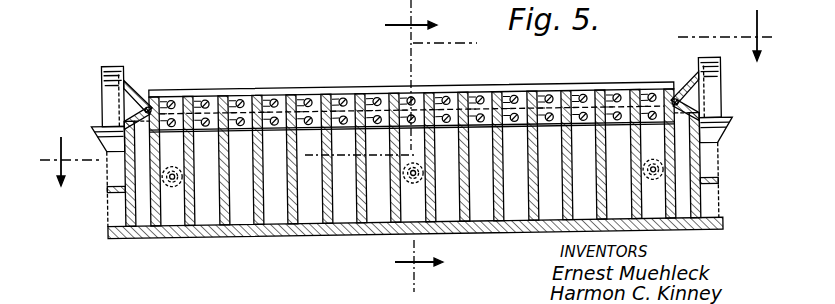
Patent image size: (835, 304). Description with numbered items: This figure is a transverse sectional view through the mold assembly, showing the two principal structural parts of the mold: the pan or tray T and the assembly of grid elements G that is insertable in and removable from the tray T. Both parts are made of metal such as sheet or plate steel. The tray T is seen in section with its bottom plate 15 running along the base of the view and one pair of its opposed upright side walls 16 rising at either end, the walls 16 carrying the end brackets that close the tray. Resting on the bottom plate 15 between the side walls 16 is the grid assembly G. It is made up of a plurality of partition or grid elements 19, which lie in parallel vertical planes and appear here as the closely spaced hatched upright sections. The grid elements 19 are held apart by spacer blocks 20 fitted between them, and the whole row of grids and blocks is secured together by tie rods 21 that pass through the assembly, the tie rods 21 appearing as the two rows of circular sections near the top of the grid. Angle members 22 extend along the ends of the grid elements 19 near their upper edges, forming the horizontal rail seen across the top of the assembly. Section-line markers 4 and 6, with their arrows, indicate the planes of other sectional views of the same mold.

The tray T is at (179, 240).
The bottom plate 15 is at (321, 237).
The side walls 16 is at (134, 170).
The grid assembly G is at (322, 85).
The grid elements 19 is at (290, 222).
The spacer blocks 20 is at (521, 88).
The tie rods 21 is at (251, 96).
The angle members 22 is at (607, 85).
The section line 6- 6 is at (391, 146).
The section line 4- 4 is at (405, 98).